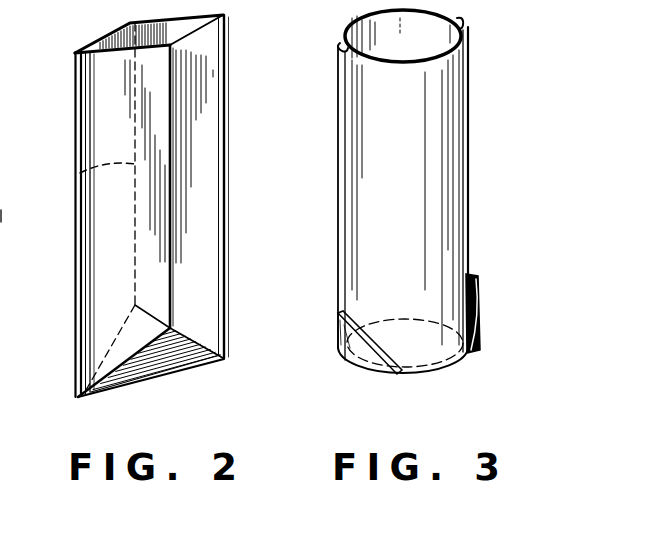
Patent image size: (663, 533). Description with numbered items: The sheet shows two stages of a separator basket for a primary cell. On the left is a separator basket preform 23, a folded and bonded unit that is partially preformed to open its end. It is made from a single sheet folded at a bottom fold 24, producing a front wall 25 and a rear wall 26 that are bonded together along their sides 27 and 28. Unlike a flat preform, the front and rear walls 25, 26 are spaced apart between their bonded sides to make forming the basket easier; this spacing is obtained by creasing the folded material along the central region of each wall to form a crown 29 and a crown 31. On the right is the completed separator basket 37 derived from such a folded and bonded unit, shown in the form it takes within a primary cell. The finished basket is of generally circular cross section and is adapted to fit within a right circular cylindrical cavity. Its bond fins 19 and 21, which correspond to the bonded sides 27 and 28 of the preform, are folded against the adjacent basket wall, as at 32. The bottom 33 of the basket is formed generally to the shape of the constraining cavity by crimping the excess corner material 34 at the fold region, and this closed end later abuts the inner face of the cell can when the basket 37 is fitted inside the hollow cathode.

In FIG. 3, the bond fin 19 is at (343, 233).
In FIG. 3, the bond fin 21 is at (468, 88).
In FIG. 2, the separator basket preform 23 is at (70, 220).
In FIG. 2, the bottom fold 24 is at (78, 398).
In FIG. 2, the front wall 25 is at (197, 172).
In FIG. 2, the rear wall 26 is at (132, 37).
In FIG. 2, the bonded side 27 is at (78, 102).
In FIG. 2, the bonded side 28 is at (223, 95).
In FIG. 2, the crown 29 is at (172, 263).
In FIG. 2, the crown 31 is at (78, 174).
In FIG. 3, the folded bond fin 32 is at (345, 48).
In FIG. 3, the bottom of the basket 33 is at (418, 374).
In FIG. 3, the excess corner material 34 is at (480, 298).
In FIG. 3, the separator basket 37 is at (440, 190).